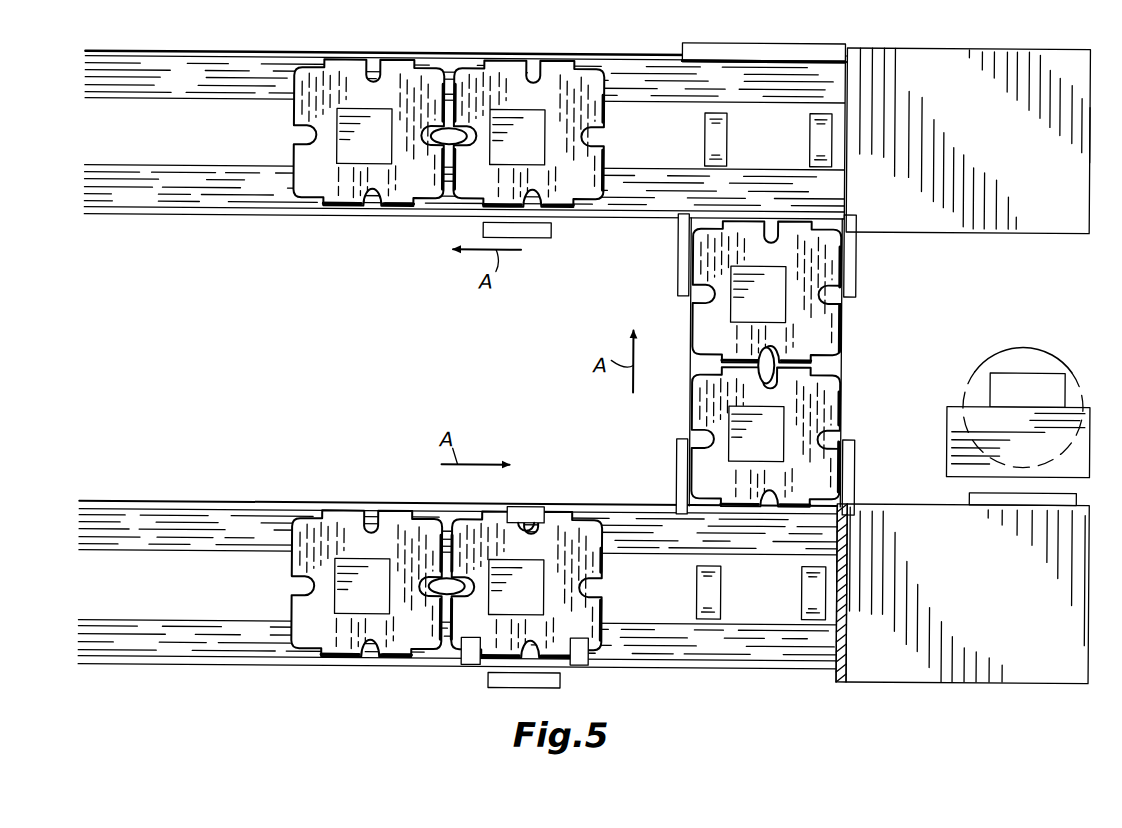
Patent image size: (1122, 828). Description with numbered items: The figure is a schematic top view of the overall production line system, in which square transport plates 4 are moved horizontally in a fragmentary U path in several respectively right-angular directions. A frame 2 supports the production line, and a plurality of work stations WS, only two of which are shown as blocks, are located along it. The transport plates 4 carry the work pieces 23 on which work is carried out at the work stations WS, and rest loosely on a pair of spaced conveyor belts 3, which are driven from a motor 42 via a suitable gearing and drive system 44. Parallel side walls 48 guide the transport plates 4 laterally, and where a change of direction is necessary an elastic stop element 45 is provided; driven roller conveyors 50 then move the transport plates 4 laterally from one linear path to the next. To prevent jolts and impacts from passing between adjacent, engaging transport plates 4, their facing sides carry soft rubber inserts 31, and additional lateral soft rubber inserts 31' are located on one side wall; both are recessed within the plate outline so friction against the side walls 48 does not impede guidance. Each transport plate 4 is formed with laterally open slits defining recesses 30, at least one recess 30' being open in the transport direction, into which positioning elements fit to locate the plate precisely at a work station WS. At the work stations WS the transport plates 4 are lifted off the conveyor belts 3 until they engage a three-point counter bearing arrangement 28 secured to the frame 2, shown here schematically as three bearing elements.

The frame 2 is at (680, 42).
The conveyor belts 3 is at (252, 90).
The transport plates 4 is at (338, 175).
The work pieces 23 is at (507, 112).
The counter bearing arrangement 28 is at (518, 510).
The recesses 30 is at (575, 369).
The recess open in the transport direction 30' is at (550, 330).
The soft rubber inserts 31 is at (720, 368).
The lateral soft rubber inserts 31' is at (365, 457).
The motor 42 is at (1004, 425).
The gearing and drive system 44 is at (906, 231).
The elastic stop element 45 is at (848, 62).
The parallel side walls 48 is at (147, 57).
The roller conveyors 50 is at (812, 152).
The work stations WS is at (545, 240).